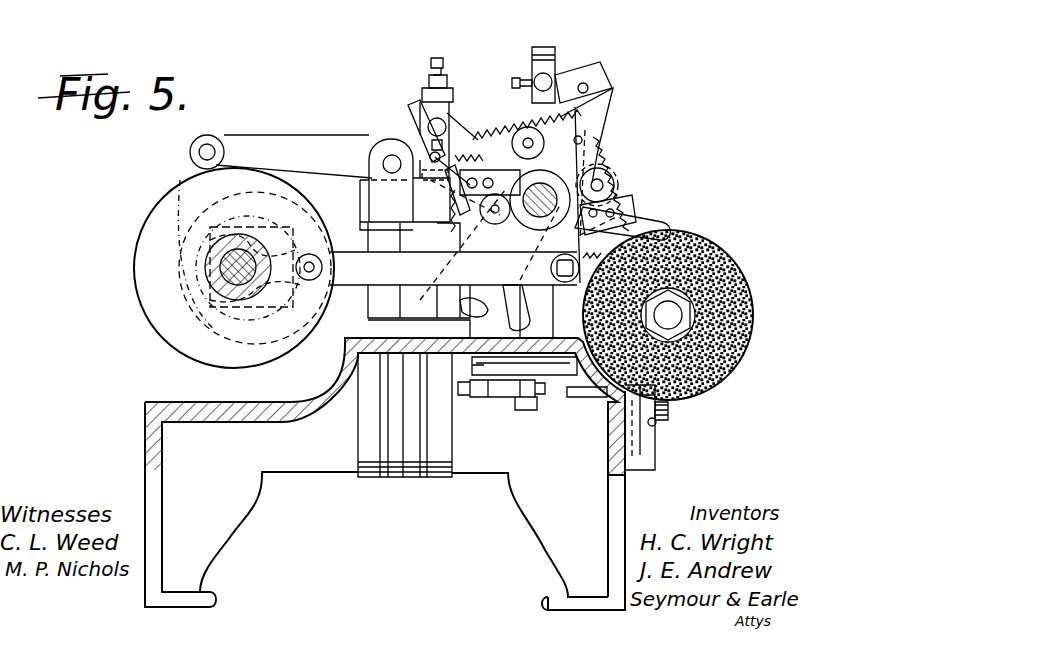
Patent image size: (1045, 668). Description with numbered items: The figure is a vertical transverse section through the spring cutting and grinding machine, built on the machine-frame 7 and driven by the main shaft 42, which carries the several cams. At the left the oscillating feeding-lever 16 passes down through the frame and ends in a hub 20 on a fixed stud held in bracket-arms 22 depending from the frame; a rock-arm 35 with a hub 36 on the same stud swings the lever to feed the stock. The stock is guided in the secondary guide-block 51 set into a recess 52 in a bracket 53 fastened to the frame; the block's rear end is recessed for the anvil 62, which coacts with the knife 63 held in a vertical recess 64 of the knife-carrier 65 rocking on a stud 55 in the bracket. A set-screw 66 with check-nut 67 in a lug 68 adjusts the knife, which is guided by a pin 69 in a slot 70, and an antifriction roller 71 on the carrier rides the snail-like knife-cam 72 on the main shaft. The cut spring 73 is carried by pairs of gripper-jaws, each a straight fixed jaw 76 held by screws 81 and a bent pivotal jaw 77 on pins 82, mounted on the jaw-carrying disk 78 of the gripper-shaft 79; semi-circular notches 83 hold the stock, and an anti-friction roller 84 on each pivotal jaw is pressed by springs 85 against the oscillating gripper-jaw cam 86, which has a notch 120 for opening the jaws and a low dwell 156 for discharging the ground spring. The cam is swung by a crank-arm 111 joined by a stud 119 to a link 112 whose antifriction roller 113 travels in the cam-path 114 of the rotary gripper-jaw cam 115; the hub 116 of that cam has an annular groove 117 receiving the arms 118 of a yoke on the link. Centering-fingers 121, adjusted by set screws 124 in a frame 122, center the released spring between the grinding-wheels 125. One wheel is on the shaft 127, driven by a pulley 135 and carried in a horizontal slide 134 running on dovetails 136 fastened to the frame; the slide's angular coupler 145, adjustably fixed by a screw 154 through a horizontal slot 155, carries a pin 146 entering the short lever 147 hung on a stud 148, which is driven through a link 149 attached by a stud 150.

The machine-frame 7 is at (358, 472).
The oscillating feeding-lever 16 is at (403, 418).
The hub 20 is at (418, 480).
The bracket-arms 22 is at (475, 442).
The rock-arm 35 is at (380, 415).
The hub 36 is at (392, 478).
The main shaft 42 is at (205, 266).
The secondary guide-block 51 is at (378, 188).
The recess 52 is at (378, 205).
The bracket 53 is at (406, 155).
The stud 55 is at (390, 155).
The anvil 62 is at (430, 140).
The knife 63 is at (446, 130).
The vertical recess 64 is at (440, 128).
The knife-carrier 65 is at (395, 78).
The set-screw 66 is at (438, 58).
The check-nut 67 is at (445, 90).
The lug 68 is at (422, 100).
The pin 69 is at (440, 160).
The slot 70 is at (420, 150).
The antifriction roller 71 is at (208, 135).
The knife-cam 72 is at (190, 200).
The spring 73 is at (462, 142).
The fixed jaw 76 is at (682, 210).
The pivotal jaw 77 is at (628, 260).
The jaw-carrying disk 78 is at (605, 108).
The gripper-shaft 79 is at (605, 172).
The screws 81 is at (605, 210).
The pins 82 is at (585, 283).
The semi-circular notches 83 is at (463, 305).
The anti-friction roller 84 is at (380, 275).
The springs 85 is at (620, 130).
The oscillating gripper-jaw cam 86 is at (630, 140).
The crank-arm 111 is at (540, 208).
The link 112 is at (412, 292).
The antifriction roller 113 is at (318, 258).
The cam-path 114 is at (305, 345).
The rotary gripper-jaw cam 115 is at (180, 345).
The hub 116 is at (200, 282).
The annular groove 117 is at (205, 287).
The arms 118 is at (262, 360).
The stud 119 is at (590, 280).
The notch 120 is at (618, 188).
The centering-fingers 121 is at (580, 85).
The frame 122 is at (570, 48).
The set screws 124 is at (540, 46).
The grinding-wheels 125 is at (700, 243).
The shaft 127 is at (672, 312).
The horizontal slide 134 is at (648, 435).
The pulley 135 is at (650, 452).
The dovetails 136 is at (632, 462).
The angular coupler 145 is at (590, 400).
The pin 146 is at (566, 365).
The short lever 147 is at (580, 370).
The stud 148 is at (483, 398).
The link 149 is at (470, 352).
The stud 150 is at (528, 400).
The screw 154 is at (668, 415).
The horizontal slot 155 is at (662, 425).
The low dwell 156 is at (640, 215).